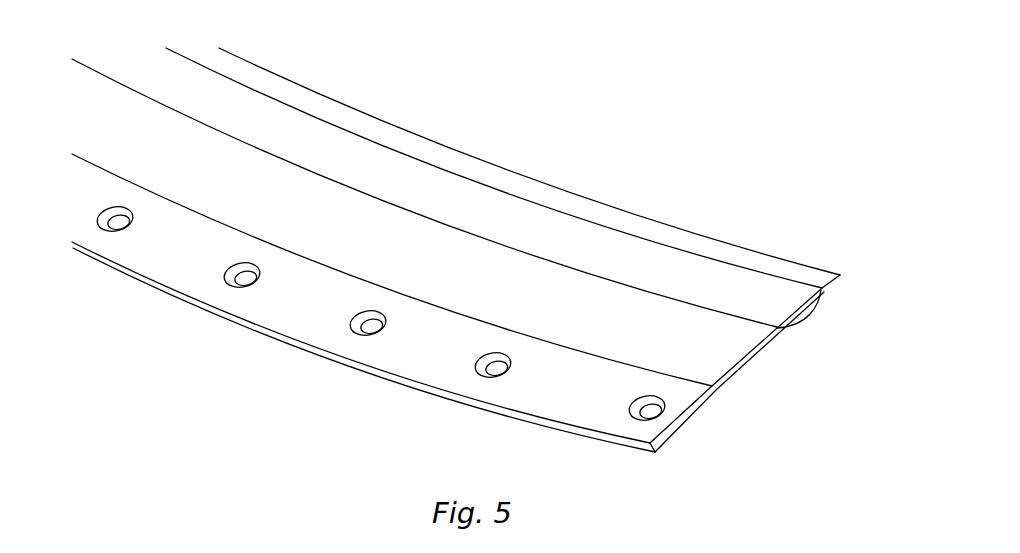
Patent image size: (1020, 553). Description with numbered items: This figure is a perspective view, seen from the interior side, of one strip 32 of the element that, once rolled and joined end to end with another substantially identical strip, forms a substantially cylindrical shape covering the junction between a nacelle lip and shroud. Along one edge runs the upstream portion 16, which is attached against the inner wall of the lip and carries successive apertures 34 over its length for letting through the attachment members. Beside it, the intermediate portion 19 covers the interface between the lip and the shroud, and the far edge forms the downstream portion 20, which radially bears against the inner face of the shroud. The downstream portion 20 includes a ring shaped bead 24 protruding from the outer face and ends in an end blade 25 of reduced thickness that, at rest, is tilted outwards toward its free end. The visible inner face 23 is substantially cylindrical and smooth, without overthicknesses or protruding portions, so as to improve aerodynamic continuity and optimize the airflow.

The strip 32 is at (551, 124).
The end blade 25 is at (670, 237).
The downstream portion 20 is at (838, 308).
The ring shaped bead 24 is at (797, 318).
The intermediate portion 19 is at (749, 375).
The inner face 23 is at (537, 398).
The upstream portion 16 is at (145, 256).
The apertures 34 is at (225, 275).